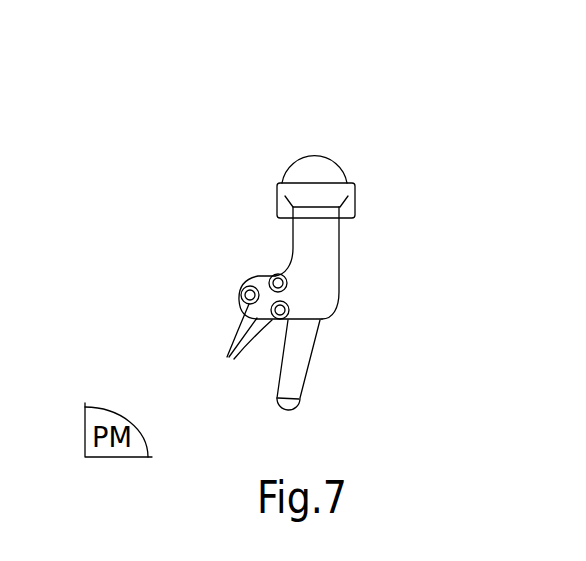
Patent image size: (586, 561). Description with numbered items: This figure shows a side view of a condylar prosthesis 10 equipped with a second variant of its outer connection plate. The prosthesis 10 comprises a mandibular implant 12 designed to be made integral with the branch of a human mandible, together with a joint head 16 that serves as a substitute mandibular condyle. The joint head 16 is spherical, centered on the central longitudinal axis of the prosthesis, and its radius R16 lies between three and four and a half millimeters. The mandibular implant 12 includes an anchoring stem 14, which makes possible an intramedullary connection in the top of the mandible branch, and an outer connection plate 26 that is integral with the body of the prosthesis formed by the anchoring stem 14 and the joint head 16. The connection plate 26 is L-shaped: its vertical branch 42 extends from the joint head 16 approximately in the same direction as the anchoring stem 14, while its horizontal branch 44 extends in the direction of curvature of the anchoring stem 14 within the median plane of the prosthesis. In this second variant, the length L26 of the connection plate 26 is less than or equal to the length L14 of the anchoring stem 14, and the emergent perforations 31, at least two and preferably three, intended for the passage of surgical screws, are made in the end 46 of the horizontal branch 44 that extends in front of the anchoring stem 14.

The condylar prosthesis 10 is at (280, 138).
The joint head 16 is at (310, 162).
The radius of the joint head R16 is at (313, 177).
The outer connection plate 26 is at (330, 243).
The vertical branch 42 is at (292, 232).
The end of the horizontal branch 46 is at (238, 278).
The horizontal branch 44 is at (266, 277).
The mandibular implant 12 is at (323, 328).
The anchoring stem 14 is at (298, 387).
The emergent perforations 31 is at (228, 358).
The length of the connection plate L26 is at (158, 178).
The length of the anchoring stem L14 is at (185, 219).